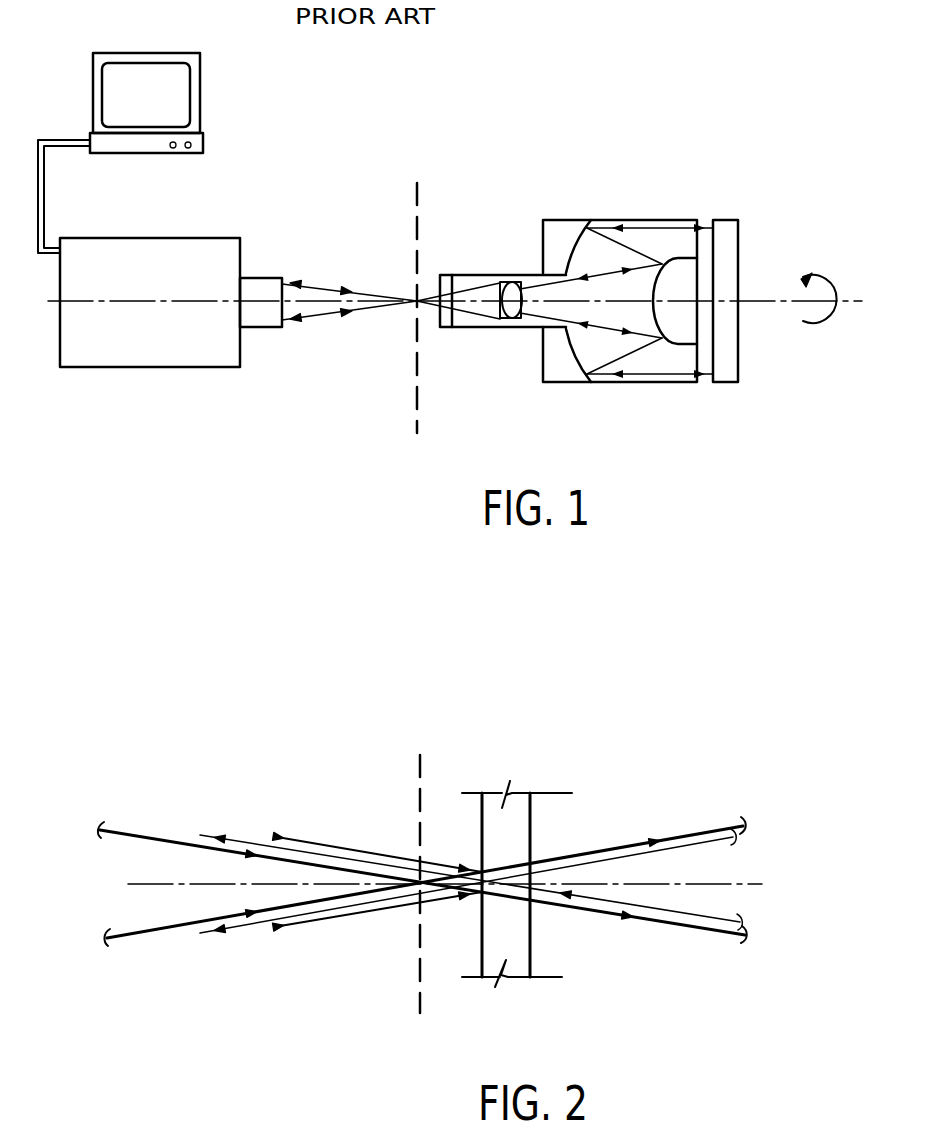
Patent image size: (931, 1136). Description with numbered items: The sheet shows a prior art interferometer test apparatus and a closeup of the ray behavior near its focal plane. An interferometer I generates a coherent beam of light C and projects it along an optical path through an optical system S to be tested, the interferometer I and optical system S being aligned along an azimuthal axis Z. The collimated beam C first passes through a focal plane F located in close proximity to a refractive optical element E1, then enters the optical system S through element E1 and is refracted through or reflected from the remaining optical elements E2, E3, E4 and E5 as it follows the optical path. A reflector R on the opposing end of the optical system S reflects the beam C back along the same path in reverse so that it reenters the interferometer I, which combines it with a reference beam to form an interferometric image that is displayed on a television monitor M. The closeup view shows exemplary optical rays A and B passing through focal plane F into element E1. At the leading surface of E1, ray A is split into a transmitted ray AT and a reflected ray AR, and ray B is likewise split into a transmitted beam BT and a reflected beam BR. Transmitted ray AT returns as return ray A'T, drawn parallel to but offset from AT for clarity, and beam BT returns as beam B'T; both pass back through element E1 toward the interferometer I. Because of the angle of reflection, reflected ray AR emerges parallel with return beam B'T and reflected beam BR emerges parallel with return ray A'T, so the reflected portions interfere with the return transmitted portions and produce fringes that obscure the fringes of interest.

In FIG. 1, the television monitor M is at (193, 66).
In FIG. 1, the interferometer I is at (170, 253).
In FIG. 1, the coherent beam of light C is at (321, 276).
In FIG. 1, the focal plane F is at (417, 418).
In FIG. 2, the focal plane F is at (420, 1003).
In FIG. 1, the refractive optical element E1 is at (447, 275).
In FIG. 2, the refractive optical element E1 is at (513, 958).
In FIG. 1, the optical element E2 is at (508, 282).
In FIG. 1, the optical element E3 is at (512, 316).
In FIG. 1, the optical element E4 is at (563, 373).
In FIG. 1, the optical element E5 is at (678, 322).
In FIG. 1, the optical system S is at (602, 270).
In FIG. 1, the reflector R is at (727, 232).
In FIG. 1, the azimuthal axis Z is at (846, 303).
In FIG. 2, the azimuthal axis Z is at (744, 884).
In FIG. 2, the optical ray A is at (421, 858).
In FIG. 2, the optical ray B is at (423, 900).
In FIG. 2, the transmitted ray AT is at (675, 925).
In FIG. 2, the transmitted beam BT is at (622, 845).
In FIG. 2, the return transmitted ray A'T is at (471, 849).
In FIG. 2, the return transmitted beam B'T is at (492, 904).
In FIG. 2, the reflected ray AR is at (337, 918).
In FIG. 2, the reflected beam BR is at (326, 845).